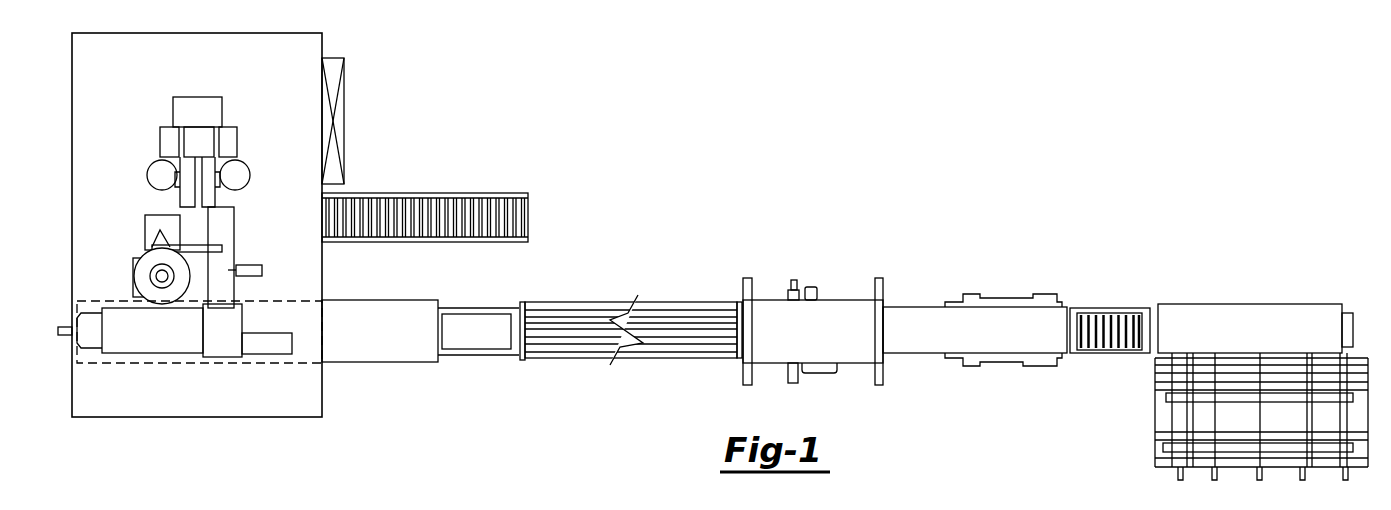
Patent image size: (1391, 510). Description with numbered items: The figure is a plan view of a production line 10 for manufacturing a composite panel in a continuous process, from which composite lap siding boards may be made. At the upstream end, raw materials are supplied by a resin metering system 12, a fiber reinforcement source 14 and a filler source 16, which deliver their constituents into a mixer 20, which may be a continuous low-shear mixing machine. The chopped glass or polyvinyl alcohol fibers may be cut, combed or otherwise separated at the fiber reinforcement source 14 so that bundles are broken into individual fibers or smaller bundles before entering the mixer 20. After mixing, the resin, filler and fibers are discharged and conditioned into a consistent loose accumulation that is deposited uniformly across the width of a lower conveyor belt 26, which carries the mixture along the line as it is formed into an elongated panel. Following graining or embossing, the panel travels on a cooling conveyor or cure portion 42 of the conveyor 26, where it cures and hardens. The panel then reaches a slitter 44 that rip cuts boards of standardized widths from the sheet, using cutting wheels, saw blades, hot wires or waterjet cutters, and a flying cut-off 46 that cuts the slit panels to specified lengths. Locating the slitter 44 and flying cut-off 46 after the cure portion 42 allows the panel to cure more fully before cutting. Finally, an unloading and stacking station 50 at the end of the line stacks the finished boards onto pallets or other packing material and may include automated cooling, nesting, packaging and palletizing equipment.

The production line 10 is at (644, 246).
The resin metering system 12 is at (167, 138).
The fiber reinforcement source 14 is at (248, 265).
The filler source 16 is at (140, 268).
The mixer 20 is at (172, 342).
The lower conveyor belt 26 is at (382, 357).
The cure portion of the conveyor 42 is at (631, 346).
The slitter 44 is at (815, 370).
The flying cut-off 46 is at (1045, 345).
The unloading and stacking station 50 is at (1255, 312).